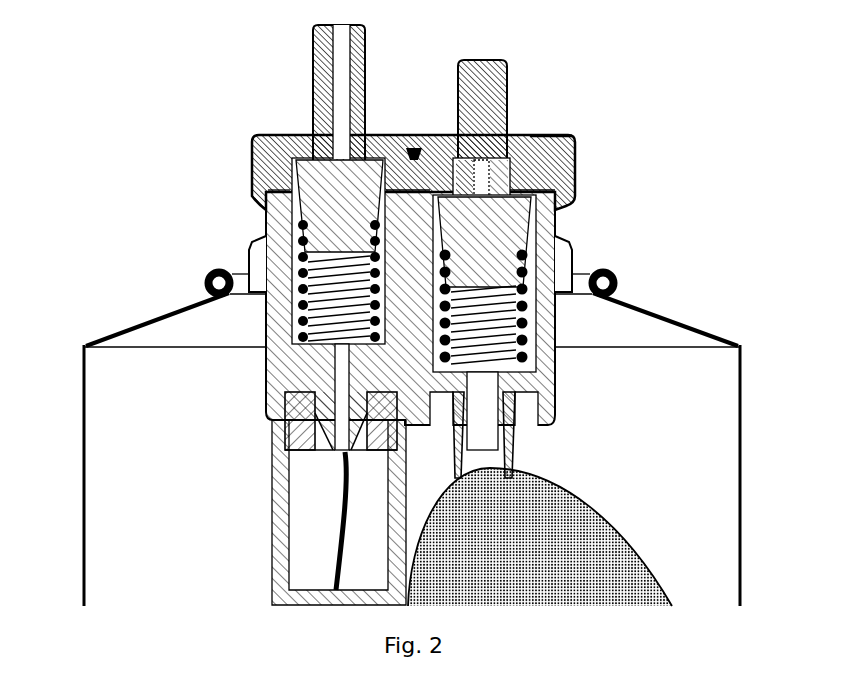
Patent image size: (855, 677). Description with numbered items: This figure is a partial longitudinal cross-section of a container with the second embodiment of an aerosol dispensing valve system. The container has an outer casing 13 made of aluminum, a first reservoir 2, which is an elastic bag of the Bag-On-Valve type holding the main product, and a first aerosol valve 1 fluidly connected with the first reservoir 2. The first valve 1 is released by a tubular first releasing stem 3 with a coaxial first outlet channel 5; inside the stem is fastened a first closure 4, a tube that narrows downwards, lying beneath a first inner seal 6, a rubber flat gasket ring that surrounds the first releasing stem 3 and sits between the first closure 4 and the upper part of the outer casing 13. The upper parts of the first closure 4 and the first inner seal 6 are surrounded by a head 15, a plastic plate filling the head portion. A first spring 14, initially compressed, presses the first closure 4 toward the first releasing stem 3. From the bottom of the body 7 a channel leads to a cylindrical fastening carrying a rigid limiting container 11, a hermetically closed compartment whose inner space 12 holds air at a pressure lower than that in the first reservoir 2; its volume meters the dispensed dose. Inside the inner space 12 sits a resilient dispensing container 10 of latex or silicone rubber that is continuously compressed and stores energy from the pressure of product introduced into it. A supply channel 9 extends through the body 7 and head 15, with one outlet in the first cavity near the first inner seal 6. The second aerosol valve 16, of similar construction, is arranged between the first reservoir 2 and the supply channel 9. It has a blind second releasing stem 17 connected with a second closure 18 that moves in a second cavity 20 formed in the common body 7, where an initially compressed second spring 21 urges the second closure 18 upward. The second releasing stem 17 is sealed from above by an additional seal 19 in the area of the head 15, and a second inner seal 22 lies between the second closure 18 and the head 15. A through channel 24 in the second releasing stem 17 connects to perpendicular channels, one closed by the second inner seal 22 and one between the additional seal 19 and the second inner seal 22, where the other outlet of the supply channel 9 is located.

The first aerosol valve 1 is at (253, 160).
The first reservoir 2 is at (548, 462).
The first releasing stem 3 is at (355, 87).
The first closure 4 is at (292, 140).
The first outlet channel 5 is at (328, 50).
The first inner seal 6 is at (373, 147).
The body 7 is at (273, 352).
The supply channel 9 is at (416, 148).
The dispensing container 10 is at (334, 518).
The rigid limiting container 11 is at (272, 558).
The inner space 12 is at (302, 532).
The outer casing 13 is at (578, 263).
The first spring 14 is at (295, 287).
The head 15 is at (562, 146).
The second aerosol valve 16 is at (520, 134).
The second releasing stem 17 is at (494, 58).
The second closure 18 is at (502, 245).
The additional seal 19 is at (532, 140).
The second cavity 20 is at (529, 254).
The second spring 21 is at (527, 322).
The second inner seal 22 is at (520, 186).
The through channel 24 is at (490, 176).